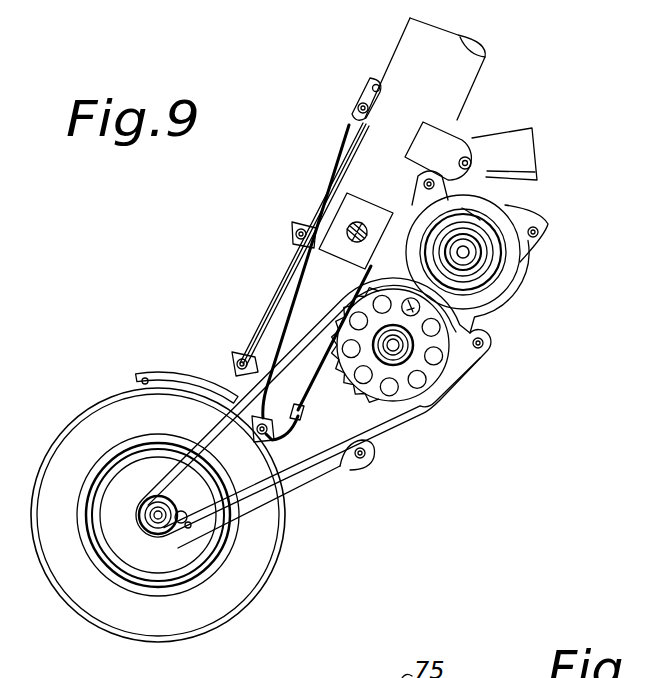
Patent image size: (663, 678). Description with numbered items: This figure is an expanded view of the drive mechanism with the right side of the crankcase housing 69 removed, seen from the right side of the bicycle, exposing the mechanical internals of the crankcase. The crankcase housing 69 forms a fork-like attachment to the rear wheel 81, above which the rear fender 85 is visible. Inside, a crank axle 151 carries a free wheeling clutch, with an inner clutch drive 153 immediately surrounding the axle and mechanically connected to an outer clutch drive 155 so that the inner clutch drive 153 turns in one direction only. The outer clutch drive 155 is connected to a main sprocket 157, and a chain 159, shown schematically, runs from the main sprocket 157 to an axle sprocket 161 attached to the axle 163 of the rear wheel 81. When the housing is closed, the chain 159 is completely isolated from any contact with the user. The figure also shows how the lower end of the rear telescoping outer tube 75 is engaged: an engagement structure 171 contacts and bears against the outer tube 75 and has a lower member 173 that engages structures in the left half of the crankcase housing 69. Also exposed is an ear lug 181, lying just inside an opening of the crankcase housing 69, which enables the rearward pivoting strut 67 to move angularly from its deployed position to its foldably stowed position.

The telescoping outer tube 75 is at (398, 63).
The ear lug 181 is at (452, 147).
The rearward strut 67 is at (515, 140).
The crankcase housing 69 is at (328, 187).
The engagement structure 171 is at (342, 230).
The lower member 173 is at (272, 308).
The rear fender 85 is at (167, 372).
The inner clutch drive 153 is at (468, 262).
The crank axle 151 is at (472, 260).
The outer clutch drive 155 is at (490, 312).
The main sprocket 157 is at (437, 373).
The chain 159 is at (320, 482).
The axle sprocket 161 is at (187, 510).
The axle 163 is at (173, 520).
The rear wheel 81 is at (105, 607).